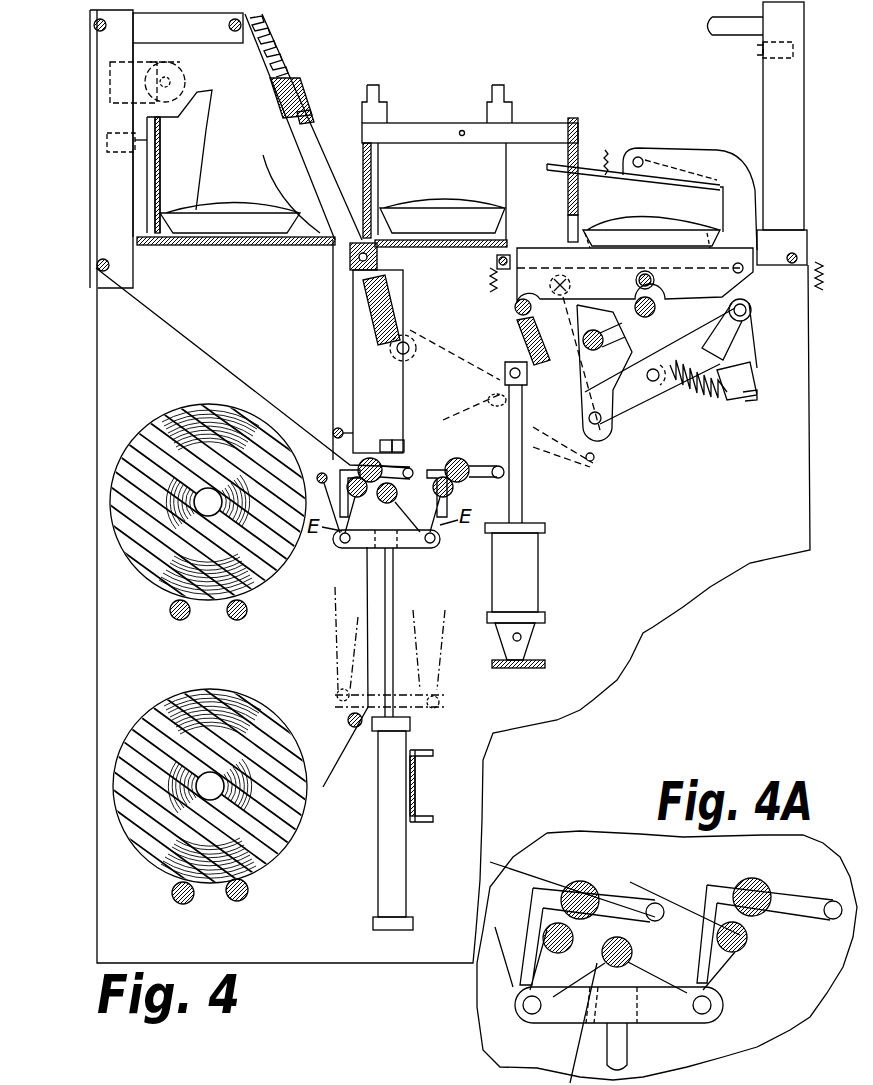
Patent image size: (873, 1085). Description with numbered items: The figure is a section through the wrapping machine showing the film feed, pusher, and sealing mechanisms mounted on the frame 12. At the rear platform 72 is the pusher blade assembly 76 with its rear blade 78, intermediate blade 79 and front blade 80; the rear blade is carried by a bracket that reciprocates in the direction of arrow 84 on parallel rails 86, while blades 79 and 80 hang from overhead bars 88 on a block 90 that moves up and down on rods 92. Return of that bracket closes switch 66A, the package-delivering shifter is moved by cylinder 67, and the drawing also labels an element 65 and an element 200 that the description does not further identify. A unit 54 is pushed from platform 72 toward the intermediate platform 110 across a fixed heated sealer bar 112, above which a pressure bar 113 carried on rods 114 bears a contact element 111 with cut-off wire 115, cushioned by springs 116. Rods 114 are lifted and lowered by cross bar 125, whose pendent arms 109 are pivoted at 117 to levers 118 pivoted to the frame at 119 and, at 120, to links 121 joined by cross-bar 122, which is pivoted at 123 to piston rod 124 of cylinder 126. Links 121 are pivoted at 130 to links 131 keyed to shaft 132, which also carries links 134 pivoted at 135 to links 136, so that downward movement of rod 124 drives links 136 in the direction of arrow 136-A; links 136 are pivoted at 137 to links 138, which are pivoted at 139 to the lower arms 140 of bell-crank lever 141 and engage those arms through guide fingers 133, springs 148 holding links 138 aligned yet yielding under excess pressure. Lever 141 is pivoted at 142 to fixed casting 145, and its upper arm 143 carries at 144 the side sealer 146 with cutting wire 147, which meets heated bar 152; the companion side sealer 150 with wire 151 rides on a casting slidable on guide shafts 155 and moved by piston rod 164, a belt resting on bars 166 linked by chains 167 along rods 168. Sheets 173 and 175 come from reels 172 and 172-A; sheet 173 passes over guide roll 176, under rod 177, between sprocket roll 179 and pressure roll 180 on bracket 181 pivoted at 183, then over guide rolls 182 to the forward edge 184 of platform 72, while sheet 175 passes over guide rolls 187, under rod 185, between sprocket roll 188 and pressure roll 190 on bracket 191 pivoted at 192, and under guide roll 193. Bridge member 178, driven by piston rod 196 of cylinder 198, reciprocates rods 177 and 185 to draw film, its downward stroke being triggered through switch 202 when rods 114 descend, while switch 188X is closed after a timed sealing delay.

In FIG. 4, the frame 12 is at (458, 963).
In FIG. 4A, the frame 12 is at (805, 1003).
In FIG. 4, the unit 54 is at (648, 228).
In FIG. 4, the roller 65 is at (185, 78).
In FIG. 4, the switch 66A is at (105, 140).
In FIG. 4, the cylinder 67 is at (178, 62).
In FIG. 4, the rear platform 72 is at (232, 247).
In FIG. 4, the pusher blade assembly 76 is at (82, 96).
In FIG. 4, the rear blade 78 is at (163, 154).
In FIG. 4, the intermediate blade 79 is at (373, 165).
In FIG. 4, the front blade 80 is at (580, 140).
In FIG. 4, the arrow 84 is at (420, 35).
In FIG. 4, the rails 86 is at (722, 32).
In FIG. 4, the overhead bars 88 is at (565, 122).
In FIG. 4, the block 90 is at (440, 120).
In FIG. 4, the rods 92 is at (506, 93).
In FIG. 4, the pendent arms 109 is at (401, 318).
In FIG. 4, the intermediate platform 110 is at (445, 249).
In FIG. 4, the contact element 111 is at (306, 101).
In FIG. 4, the heat sealer bar 112 is at (357, 258).
In FIG. 4, the pressure bar 113 is at (296, 88).
In FIG. 4, the reciprocable rods 114 is at (315, 156).
In FIG. 4, the cut-off wire 115 is at (311, 116).
In FIG. 4, the springs 116 is at (285, 49).
In FIG. 4, the pivot 117 is at (396, 352).
In FIG. 4, the levers 118 is at (430, 348).
In FIG. 4, the pivot 119 is at (598, 462).
In FIG. 4, the pivot 120 is at (495, 410).
In FIG. 4, the links 121 is at (485, 404).
In FIG. 4, the cross-bar 122 is at (520, 335).
In FIG. 4, the pivot 123 is at (508, 372).
In FIG. 4, the piston rod 124 is at (524, 493).
In FIG. 4, the cross bar 125 is at (395, 296).
In FIG. 4, the cylinder 126 is at (539, 558).
In FIG. 4, the pivot 130 is at (571, 339).
In FIG. 4, the links 131 is at (580, 290).
In FIG. 4, the shaft 132 is at (586, 353).
In FIG. 4, the guide fingers 133 is at (758, 374).
In FIG. 4, the links 134 is at (586, 393).
In FIG. 4, the pivot 135 is at (600, 425).
In FIG. 4, the links 136 is at (620, 412).
In FIG. 4, the arrow 136-A is at (657, 470).
In FIG. 4, the pivot 137 is at (656, 386).
In FIG. 4, the links 138 is at (675, 340).
In FIG. 4, the pivot 139 is at (751, 312).
In FIG. 4, the lower arms 140 is at (752, 349).
In FIG. 4, the bell-crank lever 141 is at (745, 195).
In FIG. 4, the pivot 142 is at (745, 270).
In FIG. 4, the upper arms 143 is at (715, 158).
In FIG. 4, the pivot 144 is at (645, 160).
In FIG. 4, the casting 145 is at (720, 293).
In FIG. 4, the side sealer 146 is at (608, 152).
In FIG. 4, the cutting wire 147 is at (640, 184).
In FIG. 4, the springs 148 is at (707, 395).
In FIG. 4, the side sealer 150 is at (560, 164).
In FIG. 4, the cutting wire 151 is at (563, 172).
In FIG. 4, the heat sealer bar 152 is at (662, 251).
In FIG. 4, the guide shafts 155 is at (656, 310).
In FIG. 4, the piston rod 164 is at (647, 273).
In FIG. 4, the bars 166 is at (772, 250).
In FIG. 4, the chains 167 is at (820, 282).
In FIG. 4, the rods 168 is at (797, 256).
In FIG. 4, the reel 172 is at (166, 580).
In FIG. 4, the reel 172-A is at (162, 702).
In FIG. 4, the sheet 173 is at (168, 303).
In FIG. 4A, the sheet 173 is at (510, 848).
In FIG. 4, the sheet 175 is at (327, 790).
In FIG. 4A, the sheet 175 is at (655, 888).
In FIG. 4, the guide roll 176 is at (321, 473).
In FIG. 4, the rod 177 is at (337, 692).
In FIG. 4A, the rod 177 is at (528, 1012).
In FIG. 4, the bridge member 178 is at (414, 551).
In FIG. 4, the sprocket roll 179 is at (360, 548).
In FIG. 4A, the sprocket roll 179 is at (557, 933).
In FIG. 4, the pressure roll 180 is at (357, 457).
In FIG. 4A, the pressure roll 180 is at (578, 882).
In FIG. 4, the bracket 181 is at (420, 462).
In FIG. 4A, the bracket 181 is at (612, 895).
In FIG. 4, the guide rolls 182 is at (109, 266).
In FIG. 4, the pivot 183 is at (409, 468).
In FIG. 4A, the pivot 183 is at (660, 920).
In FIG. 4, the forward edge 184 is at (273, 187).
In FIG. 4, the rod 185 is at (440, 704).
In FIG. 4A, the rod 185 is at (710, 1008).
In FIG. 4, the guide rolls 187 is at (348, 720).
In FIG. 4A, the guide rolls 187 is at (633, 953).
In FIG. 4, the sprocket roll 188 is at (454, 490).
In FIG. 4A, the sprocket roll 188 is at (746, 945).
In FIG. 4, the switch 188X is at (435, 396).
In FIG. 4, the pressure roll 190 is at (458, 458).
In FIG. 4A, the pressure roll 190 is at (753, 878).
In FIG. 4, the bracket 191 is at (481, 470).
In FIG. 4A, the bracket 191 is at (805, 897).
In FIG. 4, the pivot 192 is at (504, 472).
In FIG. 4A, the pivot 192 is at (833, 919).
In FIG. 4, the guide roll 193 is at (397, 438).
In FIG. 4, the piston rod 196 is at (395, 683).
In FIG. 4A, the piston rod 196 is at (628, 1050).
In FIG. 4, the cylinder 198 is at (407, 863).
In FIG. 4, the stop 200 is at (758, 50).
In FIG. 4, the switch 202 is at (386, 438).